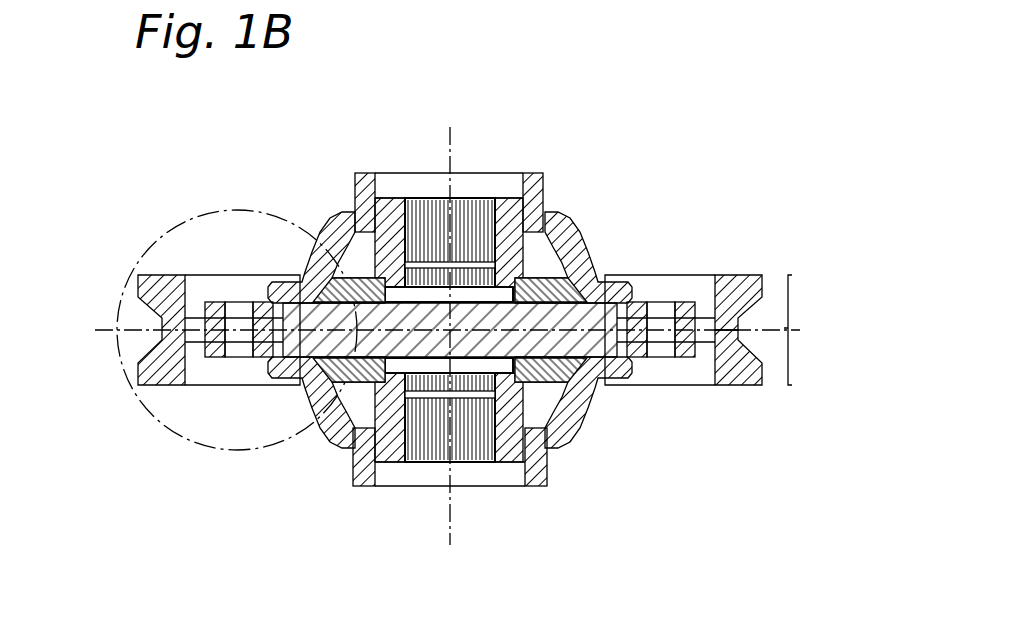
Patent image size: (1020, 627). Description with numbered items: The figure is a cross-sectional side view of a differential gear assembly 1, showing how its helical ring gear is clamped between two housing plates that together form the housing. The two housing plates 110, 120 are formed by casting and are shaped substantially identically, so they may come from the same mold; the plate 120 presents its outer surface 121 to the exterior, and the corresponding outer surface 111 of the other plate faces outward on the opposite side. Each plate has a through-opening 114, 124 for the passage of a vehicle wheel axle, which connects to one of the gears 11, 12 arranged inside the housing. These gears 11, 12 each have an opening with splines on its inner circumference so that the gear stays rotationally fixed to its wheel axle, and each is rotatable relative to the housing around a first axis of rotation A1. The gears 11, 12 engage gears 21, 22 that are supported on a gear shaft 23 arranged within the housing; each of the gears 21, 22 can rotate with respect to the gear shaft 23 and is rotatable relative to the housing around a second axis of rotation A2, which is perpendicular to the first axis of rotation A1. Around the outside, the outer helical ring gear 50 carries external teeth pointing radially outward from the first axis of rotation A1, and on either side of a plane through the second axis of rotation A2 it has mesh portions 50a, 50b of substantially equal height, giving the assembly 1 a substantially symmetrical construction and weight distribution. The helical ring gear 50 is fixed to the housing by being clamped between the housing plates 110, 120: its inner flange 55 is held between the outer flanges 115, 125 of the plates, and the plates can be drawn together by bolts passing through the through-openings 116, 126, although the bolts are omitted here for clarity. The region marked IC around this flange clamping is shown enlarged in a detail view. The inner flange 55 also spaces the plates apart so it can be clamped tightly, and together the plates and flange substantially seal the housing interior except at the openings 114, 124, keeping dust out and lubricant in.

The differential gear assembly 1 is at (675, 158).
The gear 11 is at (420, 154).
The gear 12 is at (480, 512).
The gear 21 is at (340, 390).
The gear 22 is at (580, 383).
The gear shaft 23 is at (408, 342).
The outer helical ring gear 50 is at (499, 289).
The mesh portion 50a is at (795, 299).
The mesh portion 50b is at (795, 354).
The inner flange 55 is at (250, 302).
The housing plate 110 is at (473, 221).
The first side wall 111 is at (558, 214).
The through-opening 114 is at (399, 158).
The outer flange 115 is at (210, 302).
The through-opening 116 is at (683, 270).
The housing plate 120 is at (473, 436).
The outer surface 121 is at (550, 446).
The through-opening 124 is at (505, 522).
The outer flange 125 is at (207, 385).
The through-opening 126 is at (675, 384).
The first axis of rotation A1 is at (450, 140).
The second axis of rotation A2 is at (98, 330).
The section IC is at (142, 225).